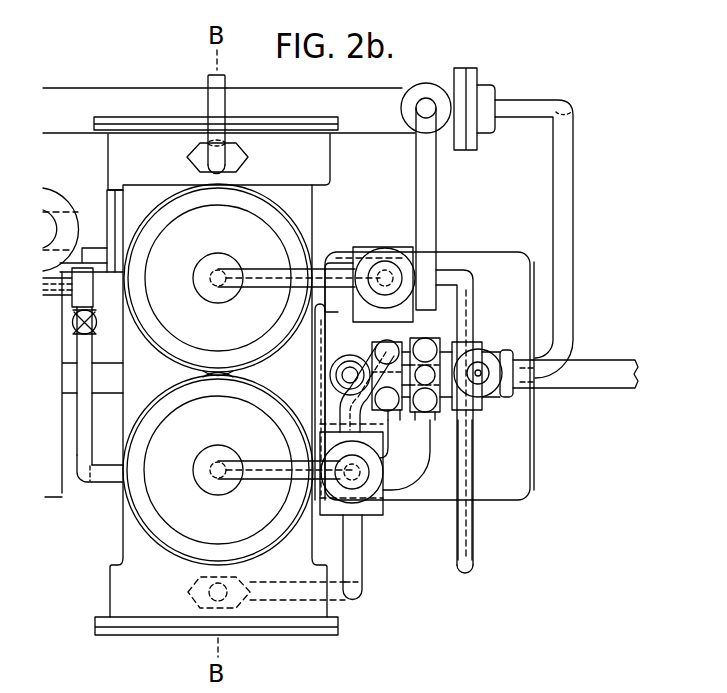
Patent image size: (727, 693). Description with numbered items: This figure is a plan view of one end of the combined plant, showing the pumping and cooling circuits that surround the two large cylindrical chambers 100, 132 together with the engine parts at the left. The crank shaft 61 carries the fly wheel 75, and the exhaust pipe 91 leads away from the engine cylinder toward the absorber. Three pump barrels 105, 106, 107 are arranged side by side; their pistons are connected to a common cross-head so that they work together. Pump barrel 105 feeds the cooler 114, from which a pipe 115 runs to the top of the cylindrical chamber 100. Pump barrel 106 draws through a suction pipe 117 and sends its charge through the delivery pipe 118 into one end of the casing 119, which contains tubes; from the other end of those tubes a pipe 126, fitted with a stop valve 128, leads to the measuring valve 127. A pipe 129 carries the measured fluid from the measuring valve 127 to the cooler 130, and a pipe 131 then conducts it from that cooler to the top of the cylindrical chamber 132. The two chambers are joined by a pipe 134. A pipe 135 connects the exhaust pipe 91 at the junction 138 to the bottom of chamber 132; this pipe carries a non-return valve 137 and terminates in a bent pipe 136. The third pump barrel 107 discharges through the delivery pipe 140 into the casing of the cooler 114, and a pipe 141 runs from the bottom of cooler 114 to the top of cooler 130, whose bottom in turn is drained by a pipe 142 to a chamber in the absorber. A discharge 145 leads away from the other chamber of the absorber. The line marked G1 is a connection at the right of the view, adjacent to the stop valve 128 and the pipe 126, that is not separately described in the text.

The crank shaft 61 is at (92, 382).
The fly wheel 75 is at (54, 498).
The exhaust pipe 91 is at (83, 230).
The cylindrical chamber 100 is at (218, 278).
The pump barrel 105 is at (383, 352).
The pump barrel 106 is at (440, 340).
The pump barrel 107 is at (499, 350).
The cooler 114 is at (395, 241).
The pipe 115 is at (282, 272).
The suction pipe 117 is at (316, 355).
The delivery pipe 118 is at (436, 208).
The casing 119 is at (428, 109).
The pipe 126 is at (553, 207).
The measuring valve 127 is at (455, 412).
The stop valve 128 is at (481, 388).
The pipe 129 is at (381, 408).
The cooler 130 is at (373, 493).
The pipe 131 is at (282, 464).
The cylindrical chamber 132 is at (218, 470).
The pipe 134 is at (197, 381).
The pipe 135 is at (103, 464).
The bent pipe 136 is at (125, 495).
The non-return valve 137 is at (93, 324).
The junction 138 is at (82, 262).
The delivery pipe 140 is at (474, 282).
The pipe 141 is at (316, 389).
The pipe 142 is at (363, 563).
The discharge 145 is at (226, 114).
The gas line G1 is at (579, 375).